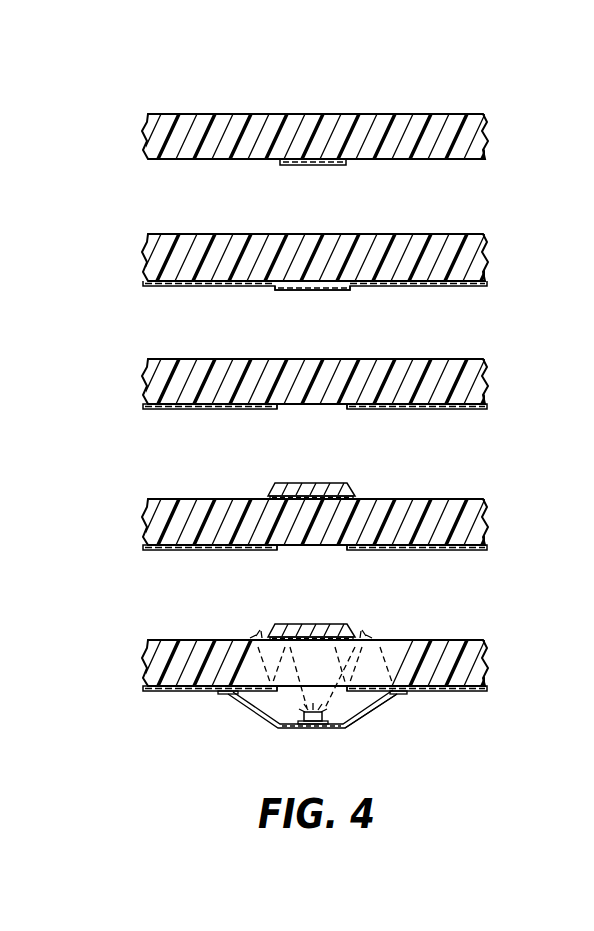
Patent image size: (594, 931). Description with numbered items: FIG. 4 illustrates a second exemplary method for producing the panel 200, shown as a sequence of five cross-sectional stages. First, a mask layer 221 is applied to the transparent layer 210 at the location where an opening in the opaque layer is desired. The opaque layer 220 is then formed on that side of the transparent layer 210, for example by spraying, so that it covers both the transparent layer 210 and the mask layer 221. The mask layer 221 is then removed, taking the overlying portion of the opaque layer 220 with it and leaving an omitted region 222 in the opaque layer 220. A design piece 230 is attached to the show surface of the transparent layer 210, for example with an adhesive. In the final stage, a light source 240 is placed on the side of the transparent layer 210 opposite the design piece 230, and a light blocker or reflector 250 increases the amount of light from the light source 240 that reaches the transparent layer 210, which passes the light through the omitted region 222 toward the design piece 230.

The panel 200 is at (101, 113).
The transparent layer 210 is at (365, 114).
The opaque layer 220 is at (378, 287).
The mask layer 221 is at (322, 166).
The omitted region 222 is at (310, 408).
The design piece 230 is at (298, 482).
The light source 240 is at (276, 722).
The light blocker or reflector 250 is at (380, 702).